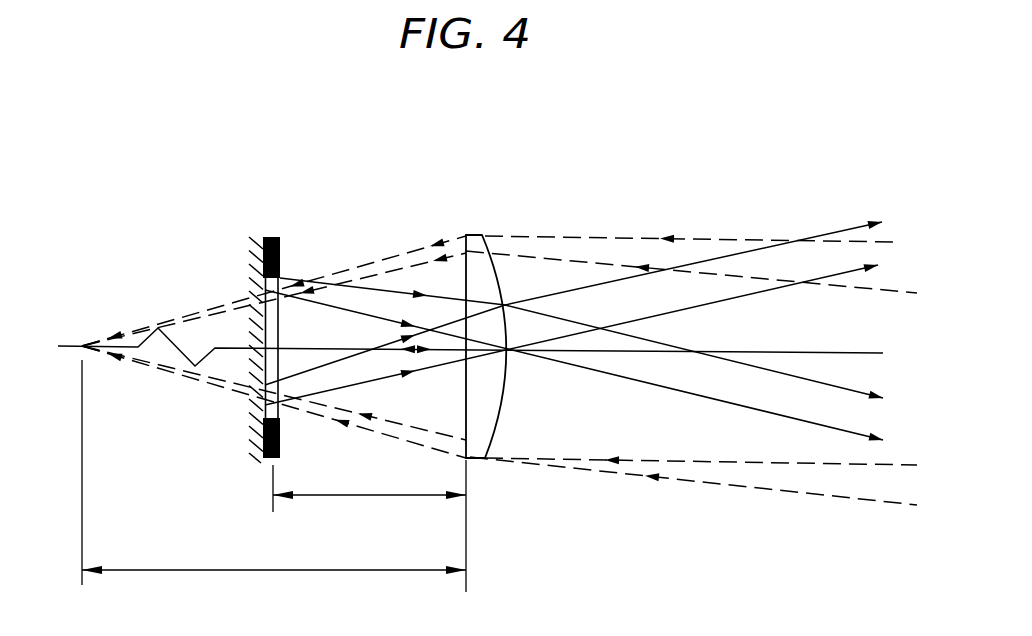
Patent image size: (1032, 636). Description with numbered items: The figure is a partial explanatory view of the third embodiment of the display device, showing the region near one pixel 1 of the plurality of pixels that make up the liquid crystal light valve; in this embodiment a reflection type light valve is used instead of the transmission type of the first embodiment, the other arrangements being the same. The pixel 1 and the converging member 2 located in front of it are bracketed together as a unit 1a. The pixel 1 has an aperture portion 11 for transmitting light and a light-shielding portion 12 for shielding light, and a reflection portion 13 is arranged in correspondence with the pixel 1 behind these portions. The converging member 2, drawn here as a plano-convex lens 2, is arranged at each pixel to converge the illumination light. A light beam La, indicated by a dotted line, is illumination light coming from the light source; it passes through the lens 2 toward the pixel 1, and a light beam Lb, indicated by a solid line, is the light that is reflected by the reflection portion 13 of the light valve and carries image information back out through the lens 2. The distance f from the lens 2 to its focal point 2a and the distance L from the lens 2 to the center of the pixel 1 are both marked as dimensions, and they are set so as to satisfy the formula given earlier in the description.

The optical unit (light source unit with lens) 1a is at (522, 133).
The pixel 1 is at (197, 178).
The aperture portion 11 is at (280, 320).
The light-shielding portion 12 is at (271, 237).
The reflection portion 13 is at (252, 260).
The converging member 2 is at (478, 235).
The focal point 2a is at (82, 342).
The light beam La is at (905, 242).
The light beam Lb is at (840, 228).
The distance L is at (369, 526).
The distance f is at (274, 481).